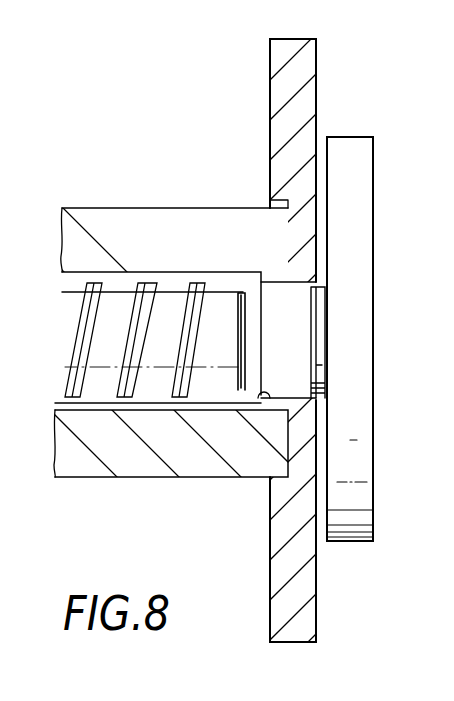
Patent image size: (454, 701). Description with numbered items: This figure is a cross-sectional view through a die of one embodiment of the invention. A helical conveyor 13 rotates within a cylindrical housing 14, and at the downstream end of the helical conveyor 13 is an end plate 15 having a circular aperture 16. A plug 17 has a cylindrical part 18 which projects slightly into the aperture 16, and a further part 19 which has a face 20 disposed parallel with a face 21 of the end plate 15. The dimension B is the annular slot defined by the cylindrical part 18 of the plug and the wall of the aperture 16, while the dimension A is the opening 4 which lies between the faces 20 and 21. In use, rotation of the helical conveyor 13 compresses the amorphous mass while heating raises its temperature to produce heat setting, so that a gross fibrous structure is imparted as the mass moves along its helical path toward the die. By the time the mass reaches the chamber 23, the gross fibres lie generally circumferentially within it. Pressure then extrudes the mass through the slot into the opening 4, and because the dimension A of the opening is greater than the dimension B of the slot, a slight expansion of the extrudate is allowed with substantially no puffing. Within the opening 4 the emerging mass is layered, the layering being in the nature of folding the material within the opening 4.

The opening 4 is at (318, 160).
The helical conveyor 13 is at (150, 393).
The cylindrical housing 14 is at (172, 455).
The end plate 15 is at (270, 582).
The circular aperture 16 is at (260, 395).
The plug 17 is at (360, 257).
The cylindrical part 18 is at (316, 323).
The further part 19 is at (357, 497).
The face 20 is at (330, 470).
The face 21 is at (316, 103).
The chamber 23 is at (272, 297).
The dimension A is at (318, 198).
The dimension B is at (311, 402).